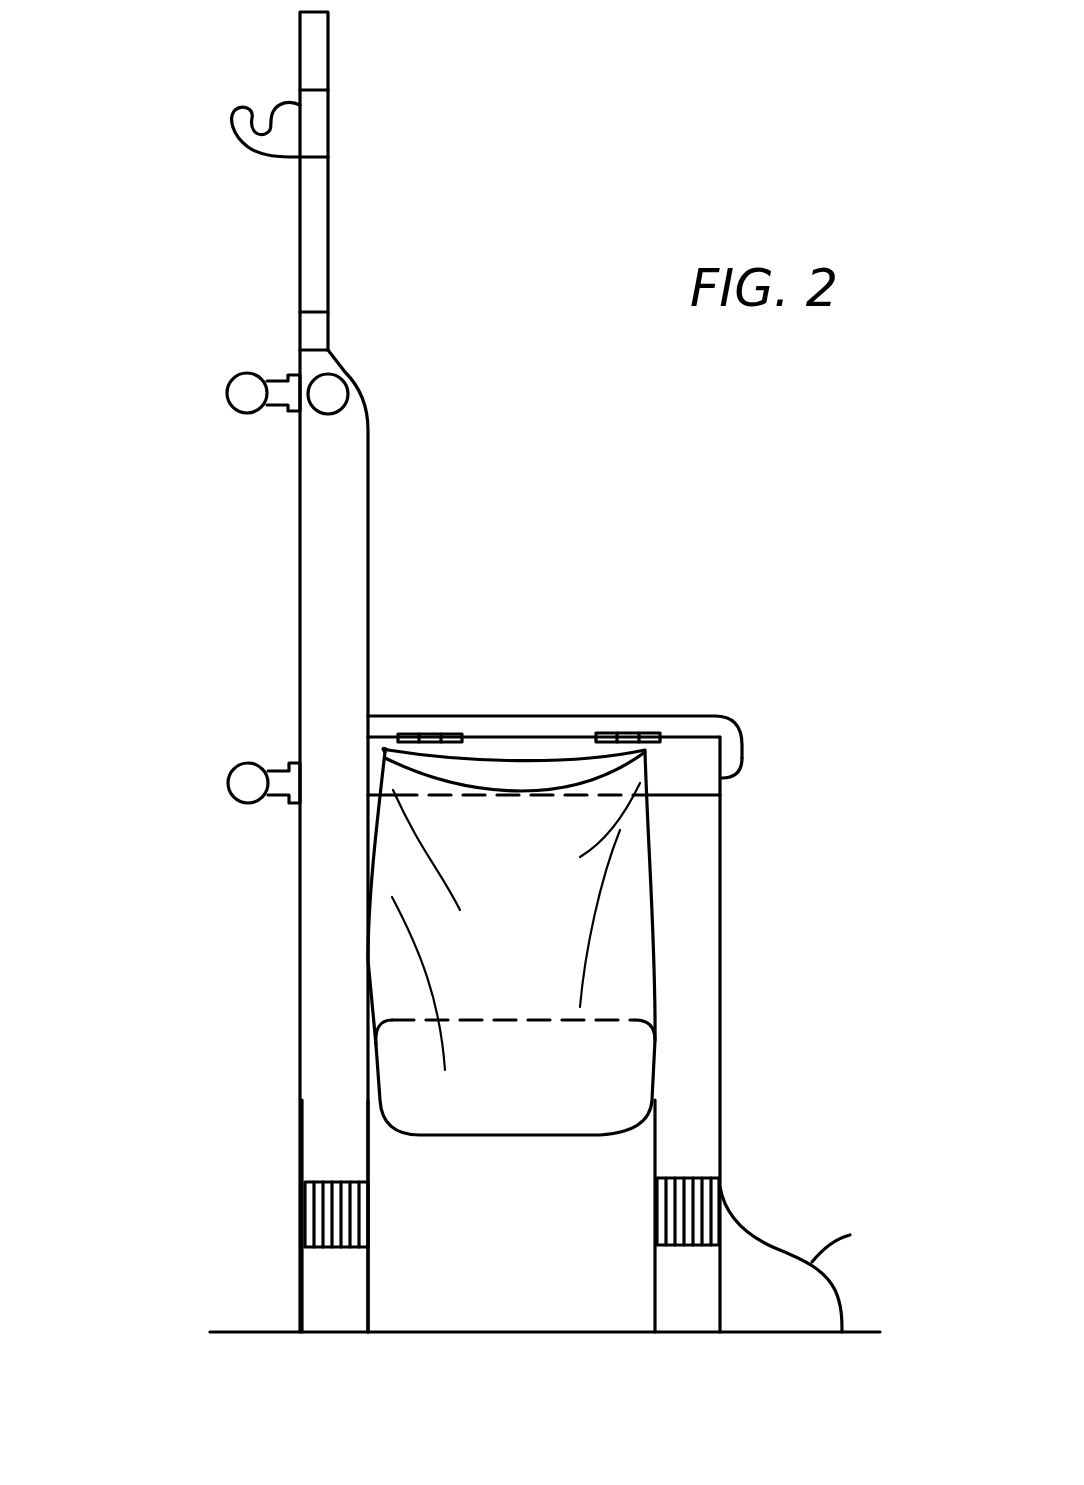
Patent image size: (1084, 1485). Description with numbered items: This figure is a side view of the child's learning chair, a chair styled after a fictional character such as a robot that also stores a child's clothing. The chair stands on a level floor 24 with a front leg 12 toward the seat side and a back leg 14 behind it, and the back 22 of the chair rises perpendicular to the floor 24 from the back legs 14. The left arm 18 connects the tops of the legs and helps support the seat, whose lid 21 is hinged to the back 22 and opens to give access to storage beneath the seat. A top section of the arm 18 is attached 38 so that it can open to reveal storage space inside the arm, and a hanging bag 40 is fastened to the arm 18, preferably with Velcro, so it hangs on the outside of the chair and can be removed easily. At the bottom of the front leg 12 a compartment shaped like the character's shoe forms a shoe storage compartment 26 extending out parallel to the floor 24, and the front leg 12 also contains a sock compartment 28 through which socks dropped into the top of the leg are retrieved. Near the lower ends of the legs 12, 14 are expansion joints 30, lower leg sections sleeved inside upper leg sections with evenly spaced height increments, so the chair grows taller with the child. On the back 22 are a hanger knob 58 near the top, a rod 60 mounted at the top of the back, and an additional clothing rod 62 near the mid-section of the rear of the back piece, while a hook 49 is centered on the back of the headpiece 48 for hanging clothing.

The front leg 12 is at (700, 963).
The back leg 14 is at (322, 1112).
The left arm 18 is at (680, 722).
The lid 21 is at (730, 760).
The back 22 is at (323, 556).
The floor 24 is at (249, 1330).
The shoe storage compartment 26 is at (850, 1235).
The sock compartment 28 is at (728, 1208).
The expansion joint 30 is at (335, 1180).
The attachment of arm top section 38 is at (628, 735).
The hanging bag 40 is at (650, 862).
The headpiece 48 is at (323, 248).
The hook 49 is at (235, 108).
The hanger knob 58 is at (345, 385).
The rod 60 is at (228, 395).
The clothing rod 62 is at (246, 763).